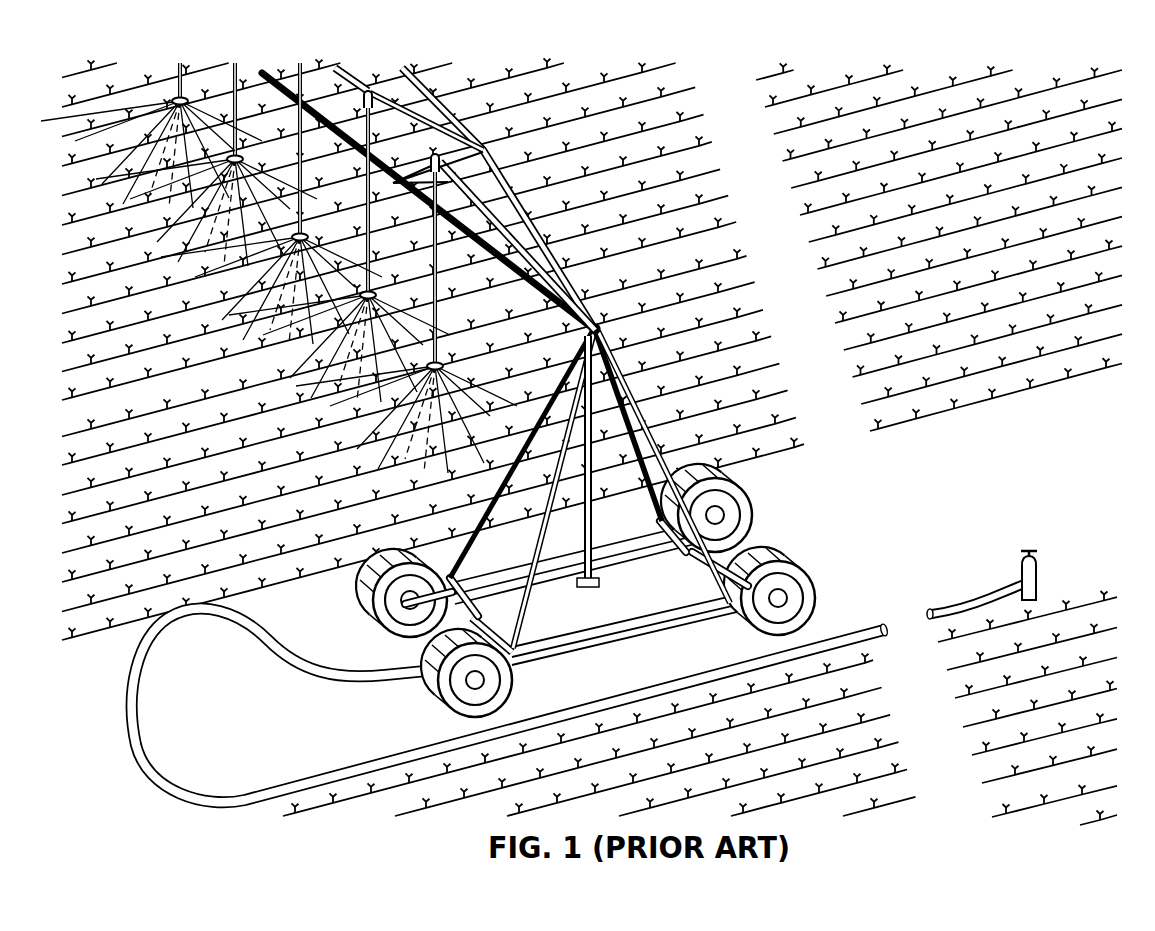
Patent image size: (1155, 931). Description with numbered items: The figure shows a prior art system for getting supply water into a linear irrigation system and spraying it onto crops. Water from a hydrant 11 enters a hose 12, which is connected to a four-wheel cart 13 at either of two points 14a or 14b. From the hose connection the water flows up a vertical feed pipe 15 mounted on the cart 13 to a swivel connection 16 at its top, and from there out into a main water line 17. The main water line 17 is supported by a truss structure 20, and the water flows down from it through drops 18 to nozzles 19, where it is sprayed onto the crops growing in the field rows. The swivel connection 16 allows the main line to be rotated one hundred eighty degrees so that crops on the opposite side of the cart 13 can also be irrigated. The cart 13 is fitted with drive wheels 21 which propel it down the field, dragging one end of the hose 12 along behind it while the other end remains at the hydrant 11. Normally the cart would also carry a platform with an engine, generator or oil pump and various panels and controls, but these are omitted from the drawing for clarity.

The hydrant 11 is at (1020, 560).
The hose 12 is at (640, 694).
The cart 13 is at (580, 612).
The connection point 14a is at (460, 580).
The connection point 14b is at (794, 556).
The vertical feed pipe 15 is at (592, 546).
The swivel connection 16 is at (600, 326).
The main water line 17 is at (494, 186).
The drops 18 is at (512, 262).
The nozzles 19 is at (448, 360).
The truss structure 20 is at (478, 147).
The drive wheels 21 is at (372, 600).